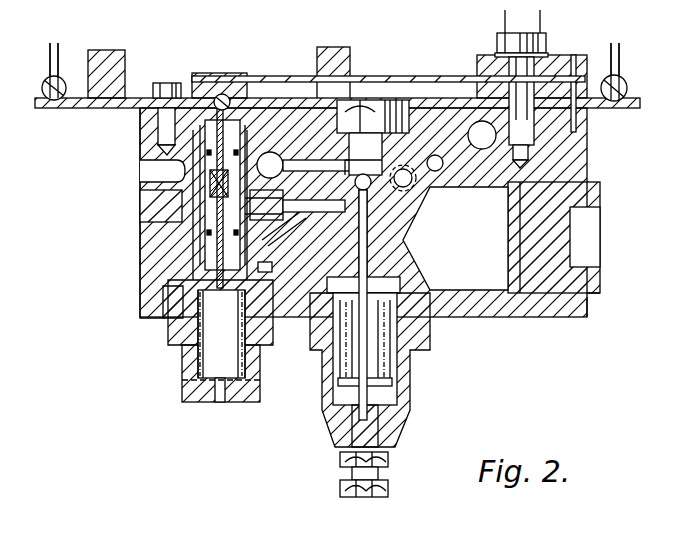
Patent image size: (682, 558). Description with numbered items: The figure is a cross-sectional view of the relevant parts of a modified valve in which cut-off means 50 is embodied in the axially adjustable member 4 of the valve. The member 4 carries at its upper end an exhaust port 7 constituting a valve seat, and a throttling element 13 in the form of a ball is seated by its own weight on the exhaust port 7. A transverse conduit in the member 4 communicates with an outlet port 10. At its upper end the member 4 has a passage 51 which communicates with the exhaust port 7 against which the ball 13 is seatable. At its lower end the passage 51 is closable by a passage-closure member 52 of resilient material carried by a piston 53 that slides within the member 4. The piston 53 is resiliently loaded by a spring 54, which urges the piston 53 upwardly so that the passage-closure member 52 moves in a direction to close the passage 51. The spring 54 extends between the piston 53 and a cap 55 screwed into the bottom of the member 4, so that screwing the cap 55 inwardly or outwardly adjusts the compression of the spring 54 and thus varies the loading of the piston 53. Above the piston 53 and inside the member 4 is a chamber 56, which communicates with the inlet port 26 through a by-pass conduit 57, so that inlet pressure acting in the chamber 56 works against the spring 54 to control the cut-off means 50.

The member 4 is at (182, 205).
The exhaust port 7 is at (224, 94).
The outlet port 10 is at (139, 163).
The throttling element 13 is at (232, 114).
The inlet port 26 is at (335, 178).
The cut-off means 50 is at (196, 243).
The passage 51 is at (258, 82).
The passage-closure member 52 is at (185, 172).
The piston 53 is at (205, 322).
The spring 54 is at (212, 363).
The cap 55 is at (238, 403).
The chamber 56 is at (268, 270).
The by-pass conduit 57 is at (305, 218).